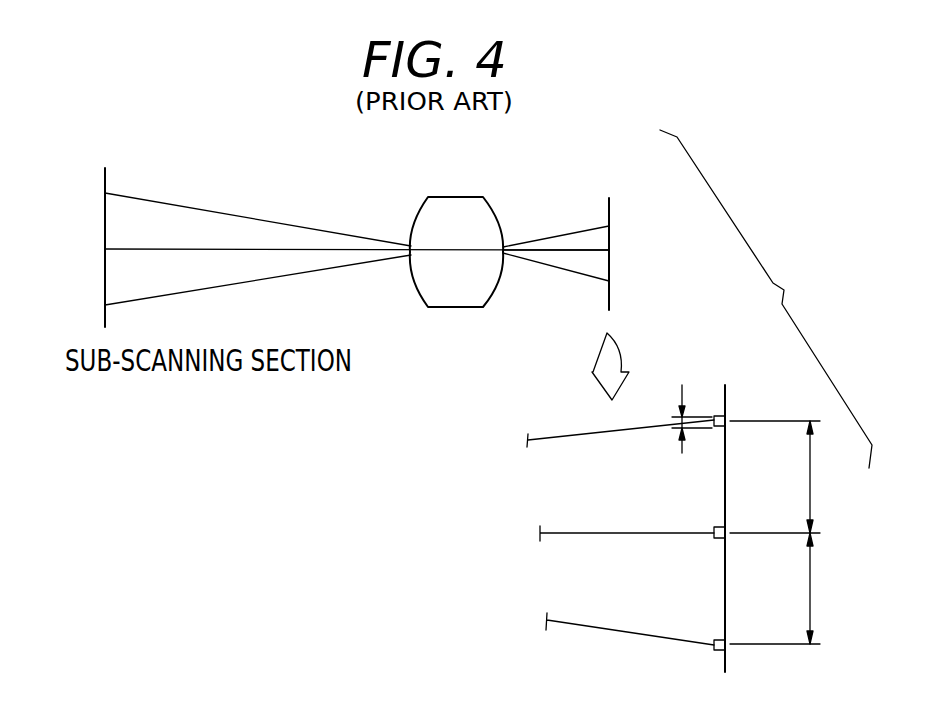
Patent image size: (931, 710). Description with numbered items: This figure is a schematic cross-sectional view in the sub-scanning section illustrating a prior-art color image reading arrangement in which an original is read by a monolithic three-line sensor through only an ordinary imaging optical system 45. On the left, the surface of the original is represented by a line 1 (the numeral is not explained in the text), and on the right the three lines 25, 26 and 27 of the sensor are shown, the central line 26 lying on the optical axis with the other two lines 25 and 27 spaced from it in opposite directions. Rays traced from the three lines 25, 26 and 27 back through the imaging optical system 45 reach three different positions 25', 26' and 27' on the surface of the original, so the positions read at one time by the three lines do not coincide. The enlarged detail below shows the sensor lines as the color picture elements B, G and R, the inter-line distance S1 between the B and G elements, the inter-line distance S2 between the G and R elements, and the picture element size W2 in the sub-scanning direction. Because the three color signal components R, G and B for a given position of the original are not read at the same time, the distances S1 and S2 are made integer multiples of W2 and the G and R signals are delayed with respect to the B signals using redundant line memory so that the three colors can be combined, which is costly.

The deflecting surface 1 is at (109, 178).
The position on the surface of the original 27' is at (229, 203).
The position on the surface of the original 26' is at (329, 238).
The position on the surface of the original 25' is at (232, 289).
The imaging optical system 45 is at (469, 210).
The line 25 is at (591, 217).
The central line 26 is at (592, 238).
The line 27 is at (591, 275).
The B signal B is at (626, 415).
The G signal G is at (632, 521).
The R signal R is at (635, 630).
The picture element size W2 is at (675, 417).
The inter-line distance S1 is at (785, 477).
The inter-line distance S2 is at (788, 588).